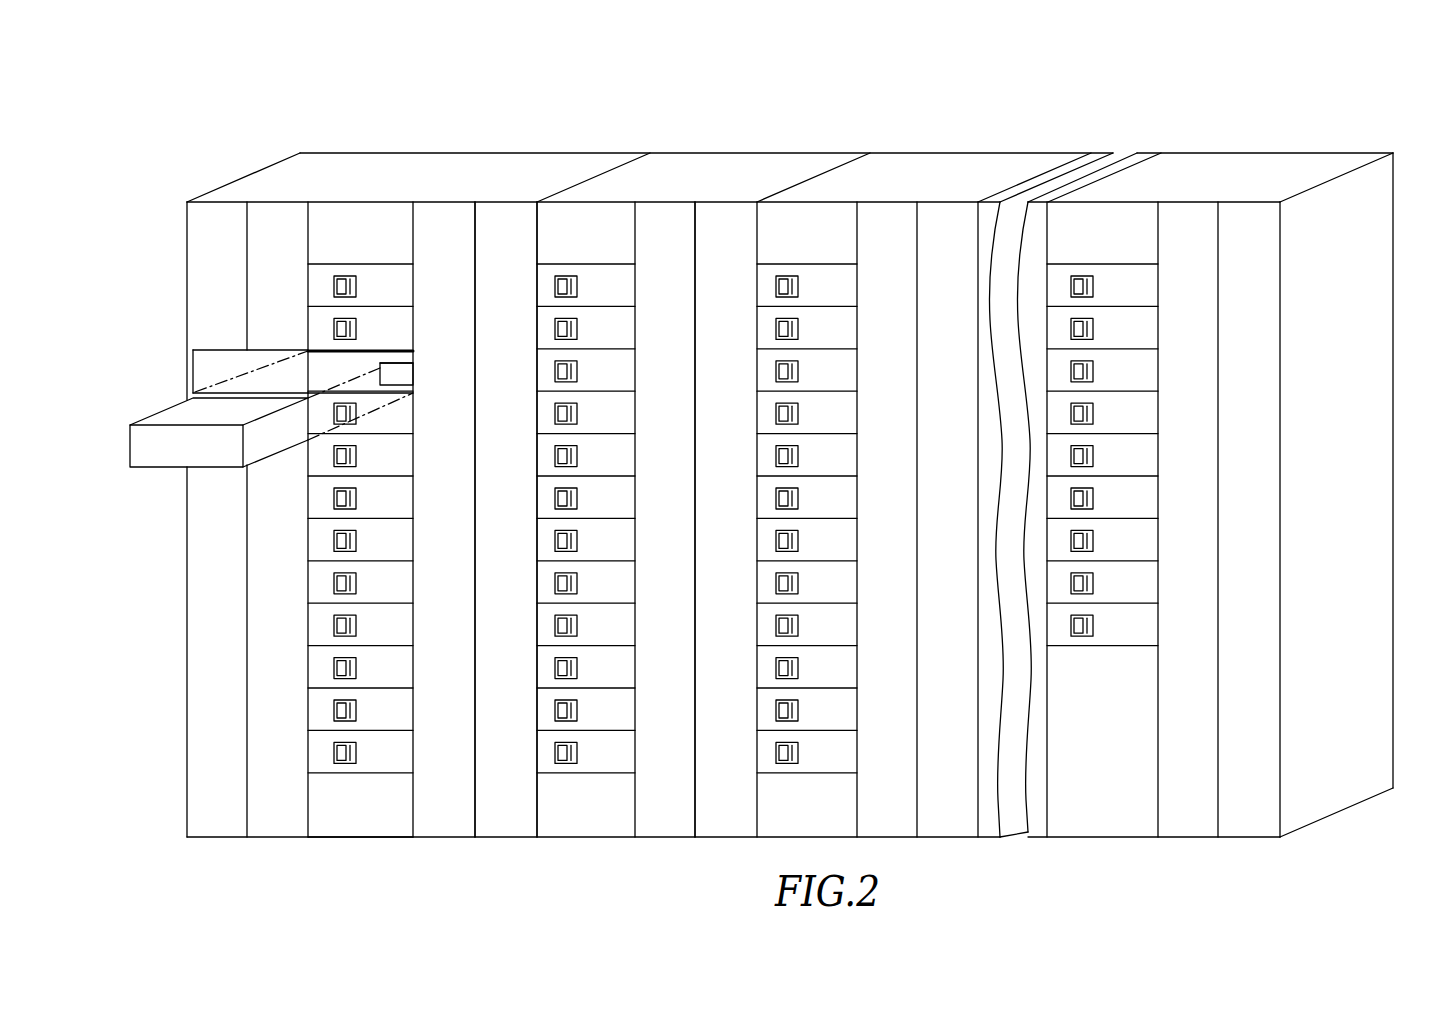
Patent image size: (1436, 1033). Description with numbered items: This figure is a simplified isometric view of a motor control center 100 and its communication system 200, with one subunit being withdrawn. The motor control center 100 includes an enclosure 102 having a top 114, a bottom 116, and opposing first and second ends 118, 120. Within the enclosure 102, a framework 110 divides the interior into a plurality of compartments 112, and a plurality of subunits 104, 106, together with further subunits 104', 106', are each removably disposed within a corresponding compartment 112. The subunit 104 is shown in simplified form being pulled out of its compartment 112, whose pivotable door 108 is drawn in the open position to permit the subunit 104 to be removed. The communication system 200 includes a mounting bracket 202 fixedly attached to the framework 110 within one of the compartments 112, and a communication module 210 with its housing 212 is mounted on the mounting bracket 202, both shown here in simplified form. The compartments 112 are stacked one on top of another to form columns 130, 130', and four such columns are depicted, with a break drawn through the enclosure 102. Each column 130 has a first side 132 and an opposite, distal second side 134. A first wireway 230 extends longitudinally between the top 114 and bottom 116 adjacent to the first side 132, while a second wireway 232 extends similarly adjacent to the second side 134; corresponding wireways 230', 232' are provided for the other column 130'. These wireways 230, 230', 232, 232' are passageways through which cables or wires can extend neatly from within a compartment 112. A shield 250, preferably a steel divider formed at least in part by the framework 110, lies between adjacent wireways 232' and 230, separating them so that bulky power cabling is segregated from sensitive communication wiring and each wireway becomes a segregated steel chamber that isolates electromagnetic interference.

The motor control center 100 is at (198, 884).
The enclosure 102 is at (338, 150).
The subunit 104 is at (196, 519).
The subunit 104' is at (894, 518).
The subunit 106 is at (304, 518).
The subunit 106' is at (591, 516).
The pivotable door 108 is at (217, 362).
The framework 110 is at (316, 358).
The compartment 112 is at (375, 360).
The top 114 is at (524, 166).
The bottom 116 is at (330, 838).
The first end 118 is at (187, 583).
The second end 120 is at (1388, 178).
The column 130 is at (305, 539).
The column 130' is at (560, 518).
The first side 132 is at (308, 655).
The second side 134 is at (413, 715).
The communication system 200 is at (220, 482).
The mounting bracket 202 is at (427, 363).
The communication module 210 is at (412, 345).
The housing 212 is at (380, 372).
The first wireway 230 is at (295, 503).
The first wireway 230' is at (496, 546).
The second wireway 232 is at (368, 239).
The second wireway 232' is at (657, 548).
The shield 250 is at (478, 397).